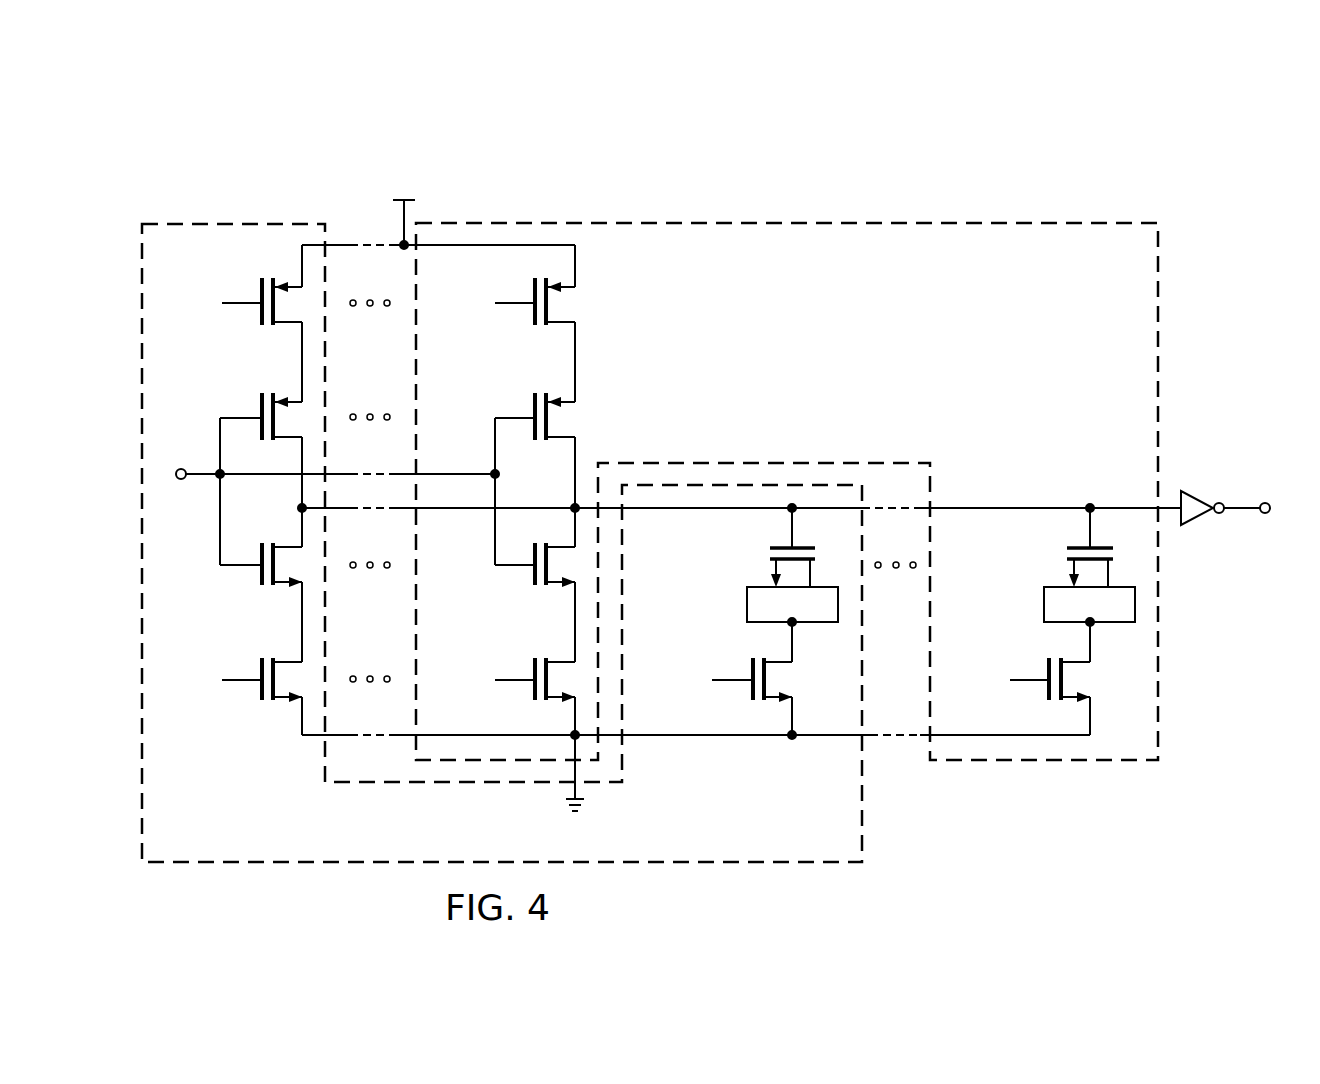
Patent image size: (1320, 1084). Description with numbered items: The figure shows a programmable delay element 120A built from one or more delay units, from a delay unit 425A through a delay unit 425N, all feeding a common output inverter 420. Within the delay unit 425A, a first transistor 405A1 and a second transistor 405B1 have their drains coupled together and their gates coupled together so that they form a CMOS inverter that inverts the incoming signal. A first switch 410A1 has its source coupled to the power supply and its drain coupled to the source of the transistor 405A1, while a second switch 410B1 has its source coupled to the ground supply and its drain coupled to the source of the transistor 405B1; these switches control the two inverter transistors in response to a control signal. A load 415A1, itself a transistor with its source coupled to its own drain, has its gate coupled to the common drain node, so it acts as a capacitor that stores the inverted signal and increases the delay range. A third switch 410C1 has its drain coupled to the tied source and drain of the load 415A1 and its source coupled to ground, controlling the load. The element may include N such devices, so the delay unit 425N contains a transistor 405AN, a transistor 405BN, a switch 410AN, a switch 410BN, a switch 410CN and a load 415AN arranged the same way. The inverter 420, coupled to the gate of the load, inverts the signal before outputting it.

The delay element 120A is at (1128, 148).
The delay unit 425A is at (172, 217).
The delay unit 425N is at (973, 217).
The first switch 410A1 is at (260, 292).
The first transistor 405A1 is at (260, 407).
The second transistor 405B1 is at (260, 578).
The second switch 410B1 is at (260, 692).
The switch 410AN is at (533, 292).
The transistor 405AN is at (533, 407).
The transistor 405BN is at (533, 578).
The switch 410BN is at (533, 692).
The load 415A1 is at (786, 546).
The third switch 410C1 is at (751, 692).
The load 415AN is at (1084, 546).
The switch 410CN is at (1047, 692).
The inverter 420 is at (1200, 518).